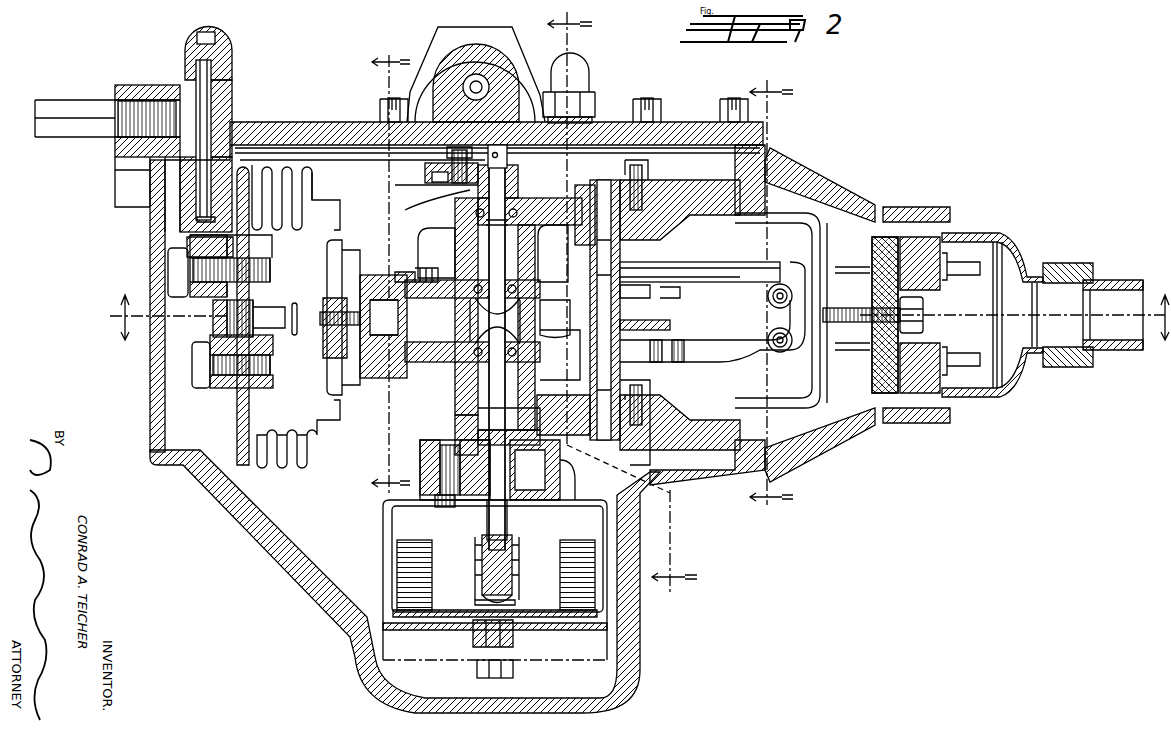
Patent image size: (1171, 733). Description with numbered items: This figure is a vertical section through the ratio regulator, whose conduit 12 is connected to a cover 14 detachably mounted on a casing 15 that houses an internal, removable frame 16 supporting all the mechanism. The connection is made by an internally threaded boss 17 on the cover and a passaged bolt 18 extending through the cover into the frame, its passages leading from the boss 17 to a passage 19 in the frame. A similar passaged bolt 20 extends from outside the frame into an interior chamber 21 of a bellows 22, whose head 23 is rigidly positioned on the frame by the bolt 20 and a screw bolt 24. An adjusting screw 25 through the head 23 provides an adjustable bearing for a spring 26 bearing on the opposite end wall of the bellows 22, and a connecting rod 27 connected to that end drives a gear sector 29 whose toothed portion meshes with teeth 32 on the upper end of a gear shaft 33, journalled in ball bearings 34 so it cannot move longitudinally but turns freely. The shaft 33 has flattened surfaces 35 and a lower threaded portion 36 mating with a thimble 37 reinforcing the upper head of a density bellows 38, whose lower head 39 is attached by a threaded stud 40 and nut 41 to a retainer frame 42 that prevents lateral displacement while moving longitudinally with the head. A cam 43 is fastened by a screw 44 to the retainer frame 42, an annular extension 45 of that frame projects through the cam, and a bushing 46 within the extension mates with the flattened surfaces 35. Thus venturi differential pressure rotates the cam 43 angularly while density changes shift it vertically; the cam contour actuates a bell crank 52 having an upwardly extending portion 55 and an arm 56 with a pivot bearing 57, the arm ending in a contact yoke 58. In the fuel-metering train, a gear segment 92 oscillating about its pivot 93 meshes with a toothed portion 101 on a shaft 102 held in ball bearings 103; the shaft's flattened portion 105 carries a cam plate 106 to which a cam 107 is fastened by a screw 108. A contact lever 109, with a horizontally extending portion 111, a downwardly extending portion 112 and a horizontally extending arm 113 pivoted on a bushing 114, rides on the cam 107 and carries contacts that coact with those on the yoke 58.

The conduit 12 is at (78, 104).
The cover 14 is at (305, 125).
The casing 15 is at (150, 400).
The frame 16 is at (185, 207).
The internally threaded boss 17 is at (150, 98).
The passaged bolt 18 is at (232, 97).
The passage 19 is at (187, 245).
The passaged bolt 20 is at (272, 280).
The interior chamber 21 is at (254, 250).
The bellows 22 is at (355, 200).
The head 23 is at (249, 236).
The screw bolt 24 is at (200, 388).
The adjusting screw 25 is at (215, 320).
The spring 26 is at (296, 340).
The connecting rod 27 is at (362, 280).
The gear sector 29 is at (472, 321).
The teeth 32 is at (505, 330).
The gear shaft 33 is at (470, 400).
The ball bearings 34 is at (460, 422).
The flattened surfaces 35 is at (490, 522).
The threaded portion 36 is at (514, 562).
The thimble 37 is at (512, 588).
The density bellows 38 is at (432, 566).
The lower head 39 is at (475, 604).
The threaded stud 40 is at (478, 640).
The nut 41 is at (512, 648).
The retainer frame 42 is at (392, 520).
The cam 43 is at (420, 452).
The screw 44 is at (445, 507).
The annular extension 45 is at (562, 462).
The bushing 46 is at (580, 480).
The bell crank 52 is at (673, 380).
The upwardly extending portion 55 is at (563, 408).
The arm 56 is at (740, 350).
The pivot bearing 57 is at (580, 360).
The contact yoke 58 is at (788, 296).
The gear segment 92 is at (584, 310).
The pivot 93 is at (640, 326).
The toothed portion 101 is at (490, 322).
The shaft 102 is at (492, 248).
The ball bearings 103 is at (535, 260).
The flattened portion 105 is at (585, 90).
The cam plate 106 is at (593, 120).
The cam 107 is at (434, 203).
The screw 108 is at (432, 168).
The contact lever 109 is at (702, 262).
The horizontally extending portion 111 is at (508, 185).
The downwardly extending portion 112 is at (557, 253).
The horizontally extending arm 113 is at (708, 283).
The bushing 114 is at (650, 300).